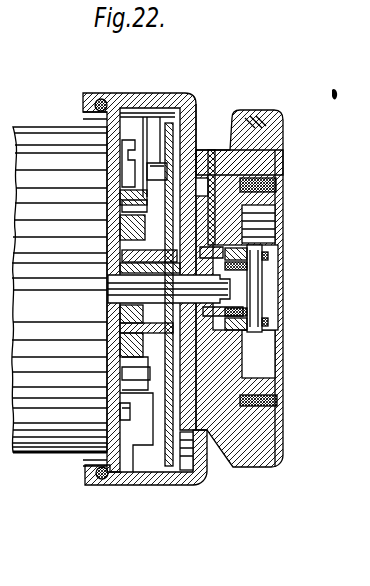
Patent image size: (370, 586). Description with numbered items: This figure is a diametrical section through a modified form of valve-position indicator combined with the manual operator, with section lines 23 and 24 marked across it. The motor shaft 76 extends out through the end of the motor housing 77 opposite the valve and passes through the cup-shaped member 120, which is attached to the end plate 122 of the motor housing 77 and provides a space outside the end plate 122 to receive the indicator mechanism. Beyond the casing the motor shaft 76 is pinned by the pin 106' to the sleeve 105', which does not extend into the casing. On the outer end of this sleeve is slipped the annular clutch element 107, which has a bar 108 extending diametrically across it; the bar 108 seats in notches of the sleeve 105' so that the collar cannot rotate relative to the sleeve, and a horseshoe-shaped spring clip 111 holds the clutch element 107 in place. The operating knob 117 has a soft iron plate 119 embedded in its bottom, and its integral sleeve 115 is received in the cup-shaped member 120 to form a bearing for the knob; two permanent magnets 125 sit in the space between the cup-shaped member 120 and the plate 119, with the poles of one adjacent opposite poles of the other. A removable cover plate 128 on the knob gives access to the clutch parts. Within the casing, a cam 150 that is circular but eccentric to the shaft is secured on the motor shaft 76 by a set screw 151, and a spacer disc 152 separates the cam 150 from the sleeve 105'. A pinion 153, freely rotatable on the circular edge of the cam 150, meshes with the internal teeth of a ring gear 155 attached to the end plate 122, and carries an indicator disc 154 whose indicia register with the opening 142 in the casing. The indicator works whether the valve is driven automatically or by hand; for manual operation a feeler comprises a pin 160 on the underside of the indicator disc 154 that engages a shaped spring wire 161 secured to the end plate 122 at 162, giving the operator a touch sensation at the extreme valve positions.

The motor housing 77 is at (40, 130).
The cup-shaped member 120 is at (92, 93).
The end plate 122 is at (110, 487).
The operating knob 117 is at (260, 150).
The soft iron plate 119 is at (222, 173).
The cover plate 128 is at (278, 363).
The sleeve 115 is at (274, 228).
The permanent magnets 125 is at (210, 150).
The pin 160 is at (197, 118).
The sleeve 105' is at (269, 288).
The pin 106' is at (271, 245).
The spring clip 111 is at (268, 256).
The bar 108 is at (257, 300).
The clutch element 107 is at (250, 323).
The motor shaft 76 is at (125, 288).
The indicator disc 154 is at (166, 460).
The spring wire 161 is at (128, 152).
The ring gear 155 is at (120, 228).
The pinion 153 is at (120, 257).
The cam 150 is at (120, 313).
The set screw 151 is at (120, 326).
The spacer disc 152 is at (120, 352).
The securing point 162 is at (130, 417).
The opening 142 is at (194, 455).
The section line 23 is at (108, 70).
The section line 24 is at (153, 78).